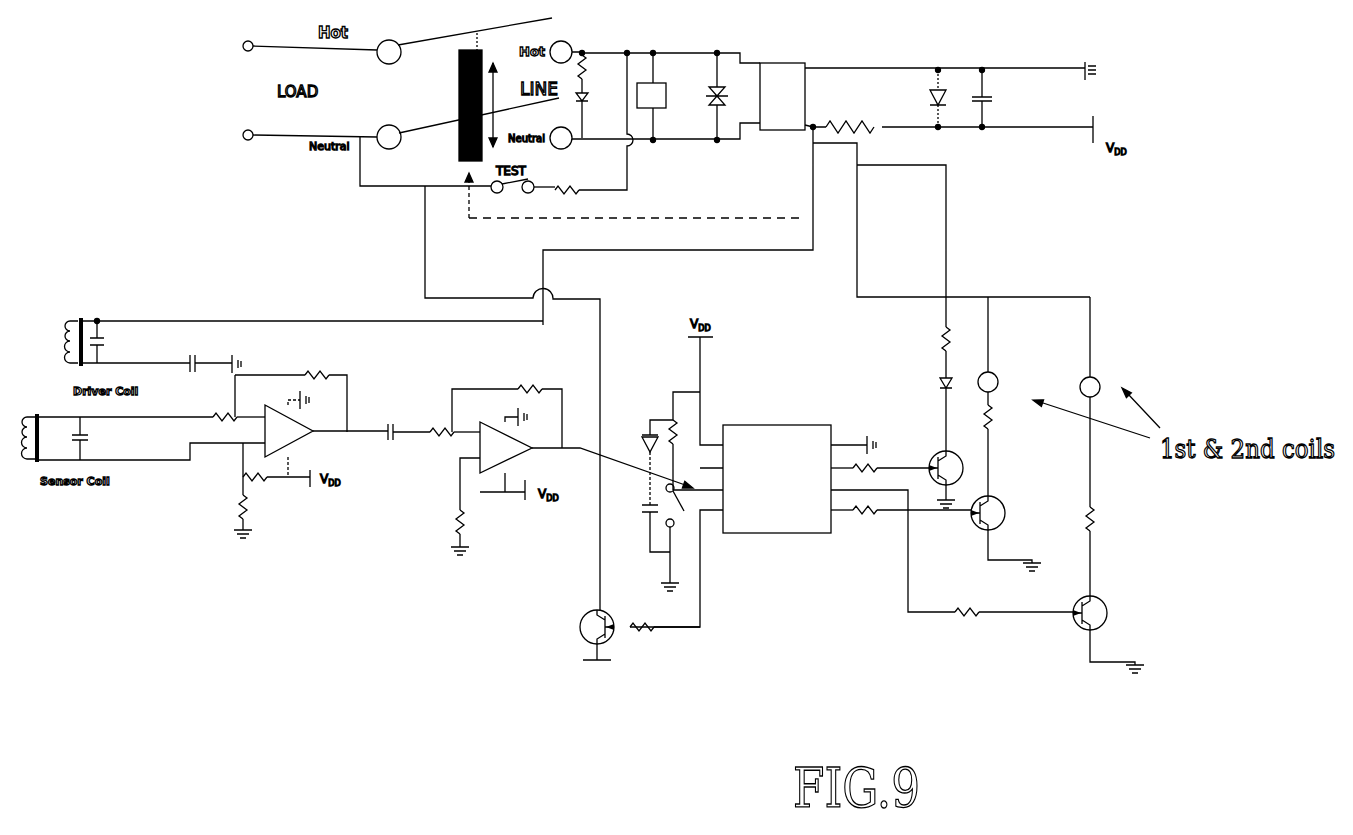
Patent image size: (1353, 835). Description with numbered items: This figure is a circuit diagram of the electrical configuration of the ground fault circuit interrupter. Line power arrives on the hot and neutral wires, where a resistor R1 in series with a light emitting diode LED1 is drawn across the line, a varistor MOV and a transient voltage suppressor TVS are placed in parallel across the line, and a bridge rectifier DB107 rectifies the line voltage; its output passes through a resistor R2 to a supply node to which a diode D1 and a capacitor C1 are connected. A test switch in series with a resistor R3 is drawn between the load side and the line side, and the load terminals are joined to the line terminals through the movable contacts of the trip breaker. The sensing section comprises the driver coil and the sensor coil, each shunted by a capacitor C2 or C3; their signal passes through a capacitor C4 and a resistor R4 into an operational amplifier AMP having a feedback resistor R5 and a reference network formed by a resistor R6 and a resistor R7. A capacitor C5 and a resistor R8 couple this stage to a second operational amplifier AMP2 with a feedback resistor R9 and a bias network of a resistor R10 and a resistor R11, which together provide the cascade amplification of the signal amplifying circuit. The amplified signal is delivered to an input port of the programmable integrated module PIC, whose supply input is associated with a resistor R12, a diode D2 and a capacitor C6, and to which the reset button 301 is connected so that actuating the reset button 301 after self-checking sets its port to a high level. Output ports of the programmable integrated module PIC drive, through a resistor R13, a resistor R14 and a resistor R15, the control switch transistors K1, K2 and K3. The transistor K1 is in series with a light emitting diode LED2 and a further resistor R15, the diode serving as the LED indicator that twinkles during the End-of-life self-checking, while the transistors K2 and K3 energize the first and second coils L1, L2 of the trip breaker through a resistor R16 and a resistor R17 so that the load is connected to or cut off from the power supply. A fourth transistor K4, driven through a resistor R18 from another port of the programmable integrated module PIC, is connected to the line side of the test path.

The reset button 301 is at (695, 548).
The resistor R1 is at (589, 67).
The resistor R2 is at (850, 117).
The test resistor R3 is at (567, 197).
The resistor R4 is at (225, 408).
The feedback resistor R5 is at (317, 364).
The resistor R6 is at (234, 507).
The resistor R7 is at (263, 484).
The resistor R8 is at (442, 422).
The feedback resistor R9 is at (530, 379).
The resistor R10 is at (448, 522).
The resistor R11 is at (502, 492).
The resistor R12 is at (681, 432).
The resistor R13 is at (874, 476).
The resistor R14 is at (872, 519).
The resistor R15 is at (960, 471).
The resistor R16 is at (996, 417).
The resistor R17 is at (1099, 519).
The resistor R18 is at (641, 619).
The capacitor C1 is at (995, 99).
The capacitor C2 is at (107, 342).
The capacitor C3 is at (89, 438).
The capacitor C4 is at (190, 376).
The capacitor C5 is at (390, 421).
The capacitor C6 is at (646, 528).
The diode D1 is at (945, 99).
The diode D2 is at (648, 462).
The light emitting diode LED1 is at (587, 108).
The light emitting diode LED2 is at (939, 401).
The metal oxide varistor MOV is at (660, 97).
The transient voltage suppressor TVS is at (725, 97).
The bridge rectifier DB107 is at (782, 97).
The amplifier AMP is at (289, 431).
The amplifier AMP2 is at (506, 447).
The PIC microcontroller PIC is at (777, 479).
The transistor K1 is at (949, 479).
The transistor K2 is at (1006, 533).
The transistor K3 is at (1108, 634).
The transistor K4 is at (592, 635).
The first coil L1 is at (995, 351).
The second coil L2 is at (1096, 402).